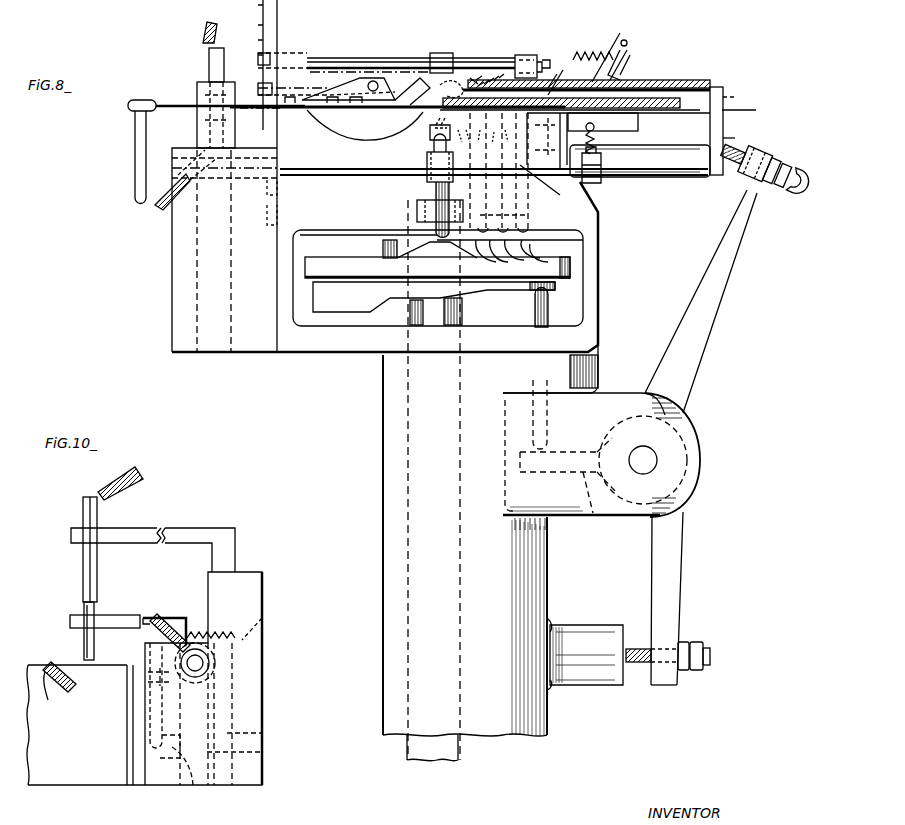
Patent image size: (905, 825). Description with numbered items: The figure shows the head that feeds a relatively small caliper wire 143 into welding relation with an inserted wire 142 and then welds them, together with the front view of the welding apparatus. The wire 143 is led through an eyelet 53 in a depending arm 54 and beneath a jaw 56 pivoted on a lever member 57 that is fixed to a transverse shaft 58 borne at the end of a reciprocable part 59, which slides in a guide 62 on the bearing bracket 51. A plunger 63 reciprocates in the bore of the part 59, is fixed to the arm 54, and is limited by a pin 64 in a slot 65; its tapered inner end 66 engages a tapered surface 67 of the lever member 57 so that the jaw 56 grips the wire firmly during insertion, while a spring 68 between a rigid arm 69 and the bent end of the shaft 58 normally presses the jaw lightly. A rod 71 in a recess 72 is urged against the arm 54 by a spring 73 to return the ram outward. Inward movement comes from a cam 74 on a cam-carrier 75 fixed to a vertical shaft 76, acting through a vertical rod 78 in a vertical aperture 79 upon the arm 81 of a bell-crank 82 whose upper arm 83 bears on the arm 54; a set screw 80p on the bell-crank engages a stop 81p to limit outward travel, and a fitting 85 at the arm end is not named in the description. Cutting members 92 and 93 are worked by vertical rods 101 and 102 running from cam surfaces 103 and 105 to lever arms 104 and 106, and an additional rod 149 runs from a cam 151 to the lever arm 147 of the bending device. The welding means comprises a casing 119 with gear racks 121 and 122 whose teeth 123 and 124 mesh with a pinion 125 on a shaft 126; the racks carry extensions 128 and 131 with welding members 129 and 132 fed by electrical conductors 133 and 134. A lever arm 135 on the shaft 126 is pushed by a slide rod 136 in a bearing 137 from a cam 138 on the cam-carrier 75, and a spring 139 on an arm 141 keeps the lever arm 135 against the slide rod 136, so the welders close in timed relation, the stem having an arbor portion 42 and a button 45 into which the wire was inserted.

In FIG. 8, the arbor portion 42 is at (135, 170).
In FIG. 8, the button 45 is at (130, 110).
In FIG. 8, the bearing bracket 51 is at (600, 333).
In FIG. 8, the eyelet 53 is at (736, 98).
In FIG. 8, the depending arm 54 is at (723, 142).
In FIG. 8, the jaw 56 is at (352, 96).
In FIG. 8, the lever member 57 is at (405, 70).
In FIG. 8, the transverse shaft 58 is at (440, 52).
In FIG. 8, the reciprocable part 59 is at (682, 72).
In FIG. 8, the guide 62 is at (640, 126).
In FIG. 8, the plunger 63 is at (712, 86).
In FIG. 8, the pin 64 is at (548, 85).
In FIG. 8, the slot 65 is at (546, 88).
In FIG. 8, the inner end 66 is at (482, 80).
In FIG. 8, the tapered surface 67 is at (458, 78).
In FIG. 8, the spring 68 is at (603, 50).
In FIG. 8, the rigid arm 69 is at (628, 60).
In FIG. 8, the rod 71 is at (660, 180).
In FIG. 8, the recess 72 is at (590, 170).
In FIG. 8, the spring 73 is at (540, 182).
In FIG. 8, the cam 74 is at (447, 290).
In FIG. 8, the cam-carrier 75 is at (572, 271).
In FIG. 8, the vertical shaft 76 is at (408, 392).
In FIG. 8, the vertical rod 78 is at (550, 301).
In FIG. 8, the vertical aperture 79 is at (580, 372).
In FIG. 8, the arm 81 is at (594, 510).
In FIG. 8, the stop 81p is at (622, 683).
In FIG. 8, the set screw 80p is at (707, 650).
In FIG. 8, the bell-crank 82 is at (690, 437).
In FIG. 8, the upper arm 83 is at (718, 292).
In FIG. 8, the fitting 85 is at (775, 160).
In FIG. 8, the cutting member 92 is at (282, 218).
In FIG. 8, the cutting member 93 is at (280, 28).
In FIG. 8, the vertical rod 101 is at (548, 205).
In FIG. 8, the vertical rod 102 is at (459, 209).
In FIG. 8, the cam surface 103 is at (545, 244).
In FIG. 8, the lever arm 104 is at (527, 55).
In FIG. 8, the cam 105 is at (497, 258).
In FIG. 8, the lever arm 106 is at (481, 134).
In FIG. 8, the casing 119 is at (172, 258).
In FIG. 10, the casing 119 is at (264, 692).
In FIG. 10, the gear rack 121 is at (262, 733).
In FIG. 10, the gear rack 122 is at (193, 785).
In FIG. 10, the teeth 123 is at (262, 752).
In FIG. 10, the teeth 124 is at (183, 723).
In FIG. 10, the pinion 125 is at (214, 665).
In FIG. 8, the shaft 126 is at (366, 176).
In FIG. 10, the shaft 126 is at (200, 664).
In FIG. 8, the extension 128 is at (233, 79).
In FIG. 10, the extension 128 is at (171, 530).
In FIG. 8, the welding member 129 is at (210, 58).
In FIG. 10, the welding member 129 is at (96, 578).
In FIG. 10, the extension 131 is at (137, 617).
In FIG. 10, the welding member 132 is at (84, 648).
In FIG. 10, the electrical conductor 133 is at (146, 475).
In FIG. 10, the electrical conductor 134 is at (61, 689).
In FIG. 8, the lever arm 135 is at (430, 133).
In FIG. 10, the lever arm 135 is at (189, 618).
In FIG. 8, the slide rod 136 is at (430, 188).
In FIG. 10, the slide rod 136 is at (150, 690).
In FIG. 8, the bearing 137 is at (417, 216).
In FIG. 8, the cam 138 is at (452, 255).
In FIG. 8, the spring 139 is at (598, 140).
In FIG. 10, the spring 139 is at (215, 633).
In FIG. 8, the arm 141 is at (600, 185).
In FIG. 10, the arm 141 is at (265, 617).
In FIG. 8, the inserted wire 142 is at (170, 98).
In FIG. 8, the small caliper wire 143 is at (243, 103).
In FIG. 8, the lever arm 147 is at (566, 75).
In FIG. 8, the rod 149 is at (535, 222).
In FIG. 8, the cam 151 is at (547, 260).